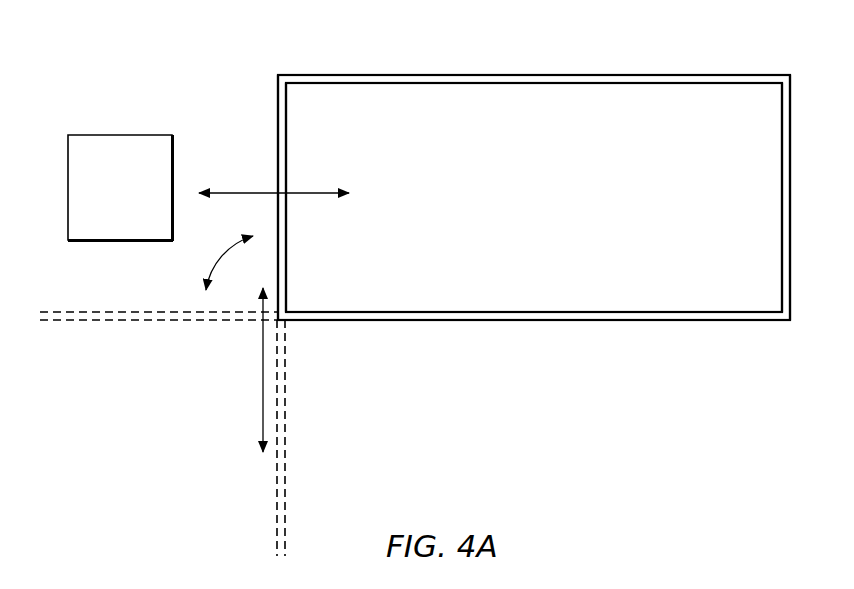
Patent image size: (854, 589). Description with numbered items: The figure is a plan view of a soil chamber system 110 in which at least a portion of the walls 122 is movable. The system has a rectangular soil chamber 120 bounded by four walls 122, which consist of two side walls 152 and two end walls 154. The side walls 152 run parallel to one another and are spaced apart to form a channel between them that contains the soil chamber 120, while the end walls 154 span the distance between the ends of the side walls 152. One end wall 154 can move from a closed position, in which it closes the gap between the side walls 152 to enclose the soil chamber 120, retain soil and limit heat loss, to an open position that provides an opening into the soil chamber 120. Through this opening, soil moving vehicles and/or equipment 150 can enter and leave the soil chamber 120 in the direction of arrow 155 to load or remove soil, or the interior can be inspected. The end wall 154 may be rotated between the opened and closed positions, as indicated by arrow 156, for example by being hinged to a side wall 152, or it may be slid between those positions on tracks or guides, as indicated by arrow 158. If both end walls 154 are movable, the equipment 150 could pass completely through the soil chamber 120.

The soil chamber system 110 is at (690, 54).
The soil chamber 120 is at (570, 202).
The walls 122 is at (548, 311).
The side walls 152 is at (496, 84).
The end walls 154 is at (277, 112).
The soil moving vehicles and/or equipment 150 is at (139, 196).
The arrow 155 is at (245, 192).
The arrow 156 is at (202, 277).
The arrow 158 is at (262, 434).